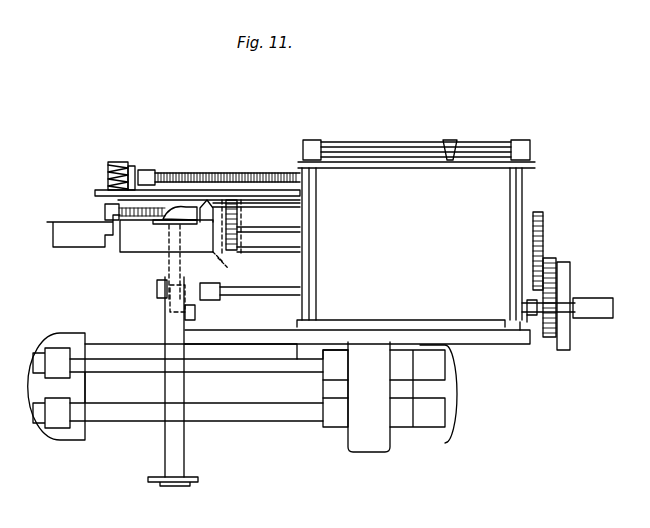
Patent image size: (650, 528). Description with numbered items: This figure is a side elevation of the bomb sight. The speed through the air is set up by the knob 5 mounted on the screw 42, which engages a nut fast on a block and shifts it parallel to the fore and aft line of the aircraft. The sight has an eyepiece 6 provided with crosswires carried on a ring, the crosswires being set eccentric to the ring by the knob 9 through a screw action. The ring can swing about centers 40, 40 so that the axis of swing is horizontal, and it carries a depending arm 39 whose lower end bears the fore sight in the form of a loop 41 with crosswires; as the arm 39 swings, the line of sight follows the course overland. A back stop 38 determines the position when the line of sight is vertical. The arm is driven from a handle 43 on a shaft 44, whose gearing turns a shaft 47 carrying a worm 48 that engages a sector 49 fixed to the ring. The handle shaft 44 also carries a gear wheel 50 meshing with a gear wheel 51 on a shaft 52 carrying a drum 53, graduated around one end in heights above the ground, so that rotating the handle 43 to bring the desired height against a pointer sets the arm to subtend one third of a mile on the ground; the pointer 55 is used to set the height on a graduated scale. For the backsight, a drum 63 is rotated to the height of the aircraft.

The knob 5 is at (130, 163).
The screw 42 is at (200, 176).
The pointer 55 is at (452, 162).
The drum 53 is at (360, 242).
The drum 63 is at (131, 244).
The eyepiece 6 is at (176, 226).
The knob 9 is at (234, 224).
The sector 49 is at (226, 266).
The depending arm 39 is at (184, 450).
The loop 41 is at (158, 477).
The back stop 38 is at (196, 312).
The worm 48 is at (157, 310).
The shaft 47 is at (267, 293).
The gear wheel 51 is at (543, 215).
The shaft 52 is at (547, 234).
The centers 40 is at (561, 264).
The shaft 44 is at (563, 302).
The handle 43 is at (603, 300).
The gear wheel 50 is at (545, 313).